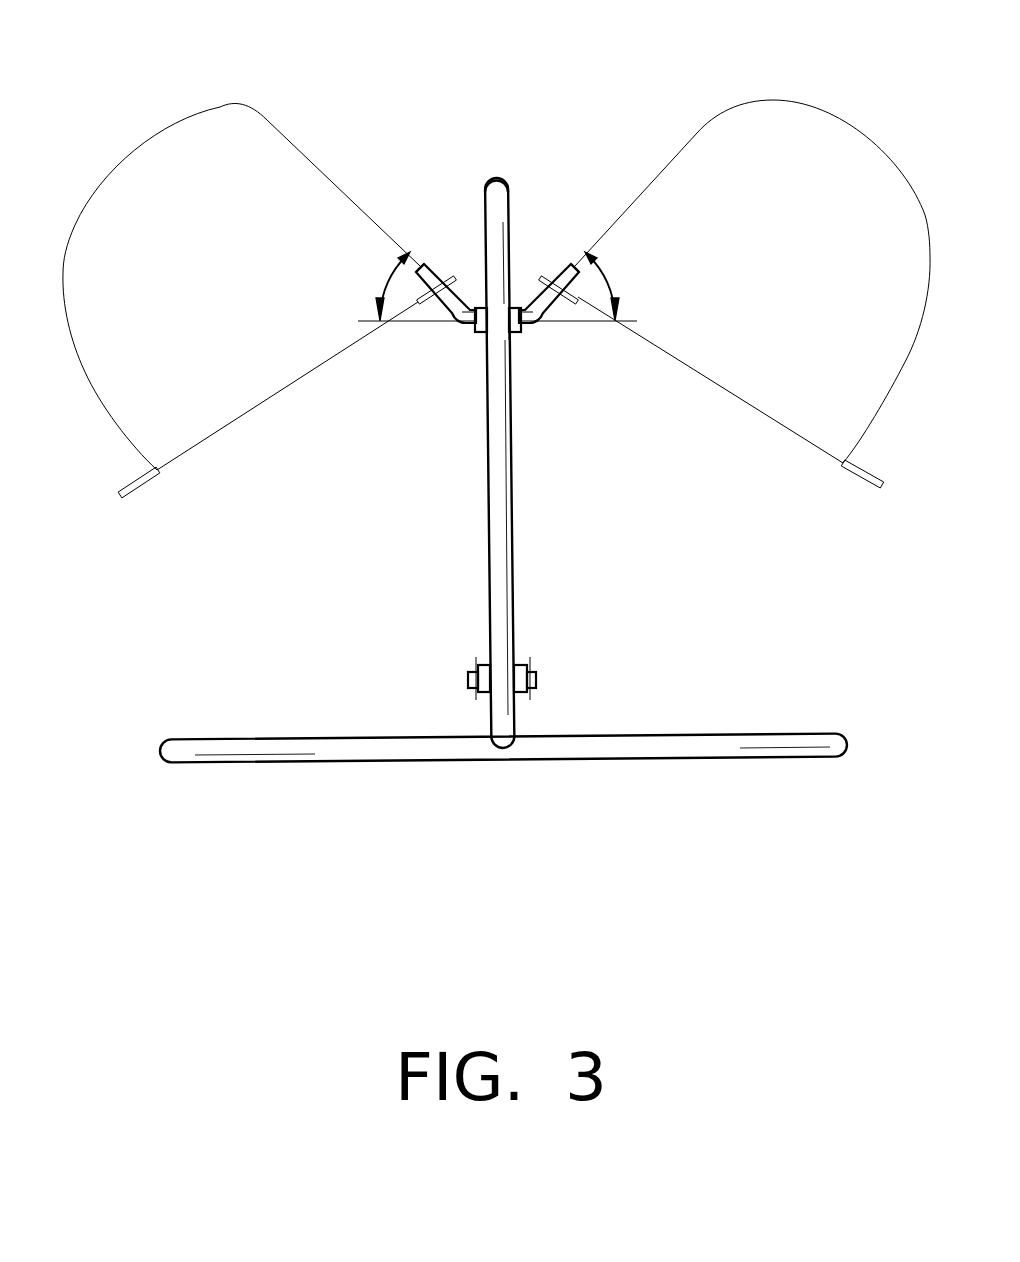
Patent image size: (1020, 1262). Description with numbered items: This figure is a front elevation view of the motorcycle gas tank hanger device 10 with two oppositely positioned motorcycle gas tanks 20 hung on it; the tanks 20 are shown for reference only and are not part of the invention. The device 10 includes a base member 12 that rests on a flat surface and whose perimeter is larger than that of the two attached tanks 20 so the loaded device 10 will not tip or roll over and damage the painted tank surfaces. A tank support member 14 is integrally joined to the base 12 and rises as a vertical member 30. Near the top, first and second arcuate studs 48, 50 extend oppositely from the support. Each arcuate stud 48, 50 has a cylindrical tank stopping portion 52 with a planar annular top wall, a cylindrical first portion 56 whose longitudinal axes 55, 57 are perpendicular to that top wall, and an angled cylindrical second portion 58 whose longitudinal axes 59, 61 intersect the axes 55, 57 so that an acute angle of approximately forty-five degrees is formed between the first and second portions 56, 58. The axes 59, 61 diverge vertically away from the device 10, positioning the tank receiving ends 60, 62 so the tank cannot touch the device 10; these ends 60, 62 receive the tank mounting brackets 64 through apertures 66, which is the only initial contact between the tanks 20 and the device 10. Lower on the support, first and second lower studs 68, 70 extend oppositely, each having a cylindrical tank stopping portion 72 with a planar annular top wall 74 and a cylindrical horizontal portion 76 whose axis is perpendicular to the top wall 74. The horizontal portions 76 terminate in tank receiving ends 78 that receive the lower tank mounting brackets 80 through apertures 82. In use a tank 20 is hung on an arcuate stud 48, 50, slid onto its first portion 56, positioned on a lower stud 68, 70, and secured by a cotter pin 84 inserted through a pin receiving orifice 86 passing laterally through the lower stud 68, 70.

The motorcycle gas tank hanger device 10 is at (562, 548).
The base member 12 is at (655, 740).
The tank support member 14 is at (490, 580).
The motorcycle gas tank 20 is at (227, 372).
The vertical member 30 is at (510, 196).
The first arcuate stud 48 is at (460, 272).
The second arcuate stud 50 is at (528, 265).
The tank stopping portion 52 is at (480, 334).
The longitudinal axis of first portion 55 is at (437, 325).
The cylindrical first portion 56 is at (478, 332).
The longitudinal axis of first portion 57 is at (580, 325).
The angled second portion 58 is at (442, 280).
The longitudinal axis of second portion 59 is at (403, 243).
The tank receiving end 60 is at (420, 262).
The longitudinal axis of second portion 61 is at (590, 242).
The tank receiving end 62 is at (575, 262).
The tank mounting bracket 64 is at (423, 323).
The aperture 66 is at (365, 302).
The first lower stud 68 is at (472, 676).
The second lower stud 70 is at (530, 677).
The tank stopping portion 72 is at (489, 692).
The planar annular top wall 74 is at (480, 666).
The cylindrical horizontal portion 76 is at (527, 683).
The tank receiving end 78 is at (468, 680).
The tank mounting bracket 80 is at (120, 495).
The aperture 82 is at (125, 490).
The cotter pin 84 is at (475, 692).
The pin receiving orifice 86 is at (528, 672).